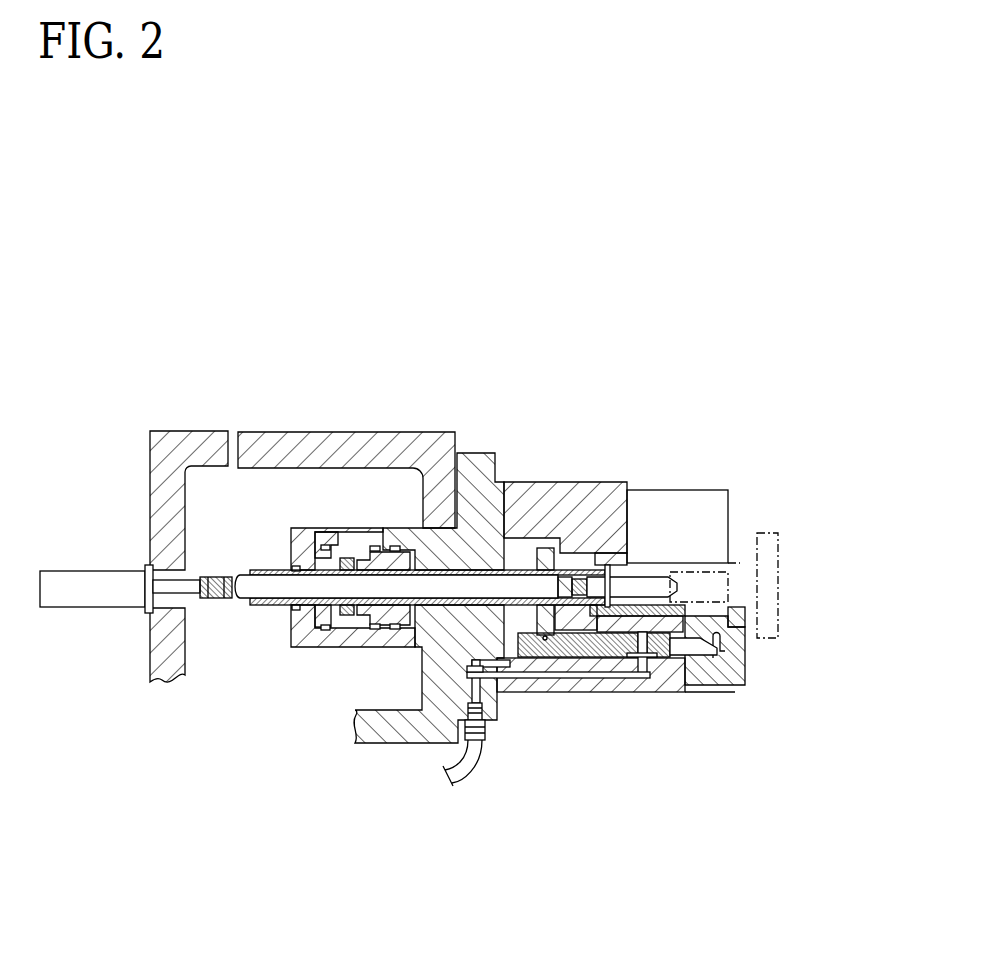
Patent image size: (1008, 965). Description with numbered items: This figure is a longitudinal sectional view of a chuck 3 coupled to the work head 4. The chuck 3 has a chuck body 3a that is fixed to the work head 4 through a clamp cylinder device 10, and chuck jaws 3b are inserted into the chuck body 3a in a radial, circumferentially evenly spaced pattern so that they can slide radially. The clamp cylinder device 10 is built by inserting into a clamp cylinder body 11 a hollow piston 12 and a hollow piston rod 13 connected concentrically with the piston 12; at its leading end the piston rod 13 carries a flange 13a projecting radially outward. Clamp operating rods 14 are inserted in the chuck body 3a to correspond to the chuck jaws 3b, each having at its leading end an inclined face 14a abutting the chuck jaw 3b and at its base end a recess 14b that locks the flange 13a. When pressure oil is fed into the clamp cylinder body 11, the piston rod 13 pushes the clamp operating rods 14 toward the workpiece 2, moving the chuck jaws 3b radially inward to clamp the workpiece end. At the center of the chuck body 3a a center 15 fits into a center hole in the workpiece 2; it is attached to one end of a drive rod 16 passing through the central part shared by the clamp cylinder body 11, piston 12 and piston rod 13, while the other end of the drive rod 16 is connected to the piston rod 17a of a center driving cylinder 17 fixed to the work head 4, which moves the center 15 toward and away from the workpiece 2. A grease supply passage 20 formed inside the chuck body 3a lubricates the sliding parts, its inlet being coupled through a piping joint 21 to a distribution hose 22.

The workpiece 2 is at (768, 533).
The chuck 3 is at (611, 485).
The chuck body 3a is at (563, 482).
The chuck jaws 3b is at (735, 688).
The work head 4 is at (318, 432).
The clamp cylinder device 10 is at (476, 450).
The clamp cylinder body 11 is at (328, 648).
The hollow piston 12 is at (383, 528).
The hollow piston rod 13 is at (518, 563).
The flange 13a is at (512, 640).
The clamp operating rods 14 is at (613, 640).
The inclined face 14a is at (707, 640).
The recess 14b is at (550, 640).
The center 15 is at (646, 577).
The drive rod 16 is at (245, 575).
The center driving cylinder 17 is at (101, 568).
The piston rod 17a is at (194, 598).
The grease supply passage 20 is at (585, 693).
The piping joint 21 is at (487, 723).
The distribution hose 22 is at (455, 783).